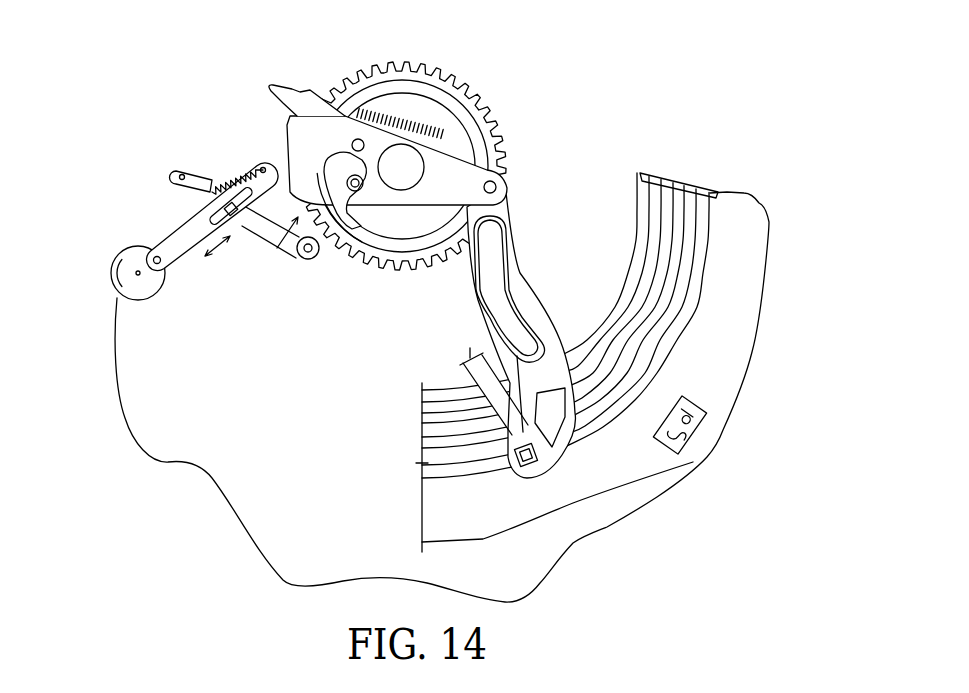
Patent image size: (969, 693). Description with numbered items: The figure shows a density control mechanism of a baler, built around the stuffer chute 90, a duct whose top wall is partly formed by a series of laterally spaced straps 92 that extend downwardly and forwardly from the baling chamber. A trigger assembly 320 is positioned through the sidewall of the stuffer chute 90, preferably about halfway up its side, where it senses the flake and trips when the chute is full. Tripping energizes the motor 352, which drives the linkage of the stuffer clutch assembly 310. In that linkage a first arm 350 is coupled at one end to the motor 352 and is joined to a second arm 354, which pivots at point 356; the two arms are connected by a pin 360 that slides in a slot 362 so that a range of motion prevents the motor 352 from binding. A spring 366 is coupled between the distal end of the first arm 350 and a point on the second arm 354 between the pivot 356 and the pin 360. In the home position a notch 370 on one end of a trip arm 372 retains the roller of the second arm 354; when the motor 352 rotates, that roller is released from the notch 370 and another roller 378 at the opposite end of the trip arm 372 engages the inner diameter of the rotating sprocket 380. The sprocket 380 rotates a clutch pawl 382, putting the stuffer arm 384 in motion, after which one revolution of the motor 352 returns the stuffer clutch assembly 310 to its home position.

The stuffer chute 90 is at (727, 357).
The straps 92 is at (687, 203).
The stuffer clutch assembly 310 is at (585, 60).
The trigger assembly 320 is at (737, 472).
The first arm 350 is at (175, 248).
The motor 352 is at (110, 268).
The second arm 354 is at (267, 228).
The pivot point 356 is at (180, 175).
The pin 360 is at (238, 217).
The slot 362 is at (210, 217).
The spring 366 is at (209, 190).
The notch 370 is at (270, 85).
The trip arm 372 is at (301, 100).
The roller 378 is at (357, 191).
The sprocket 380 is at (483, 97).
The clutch pawl 382 is at (460, 177).
The stuffer arm 384 is at (500, 217).